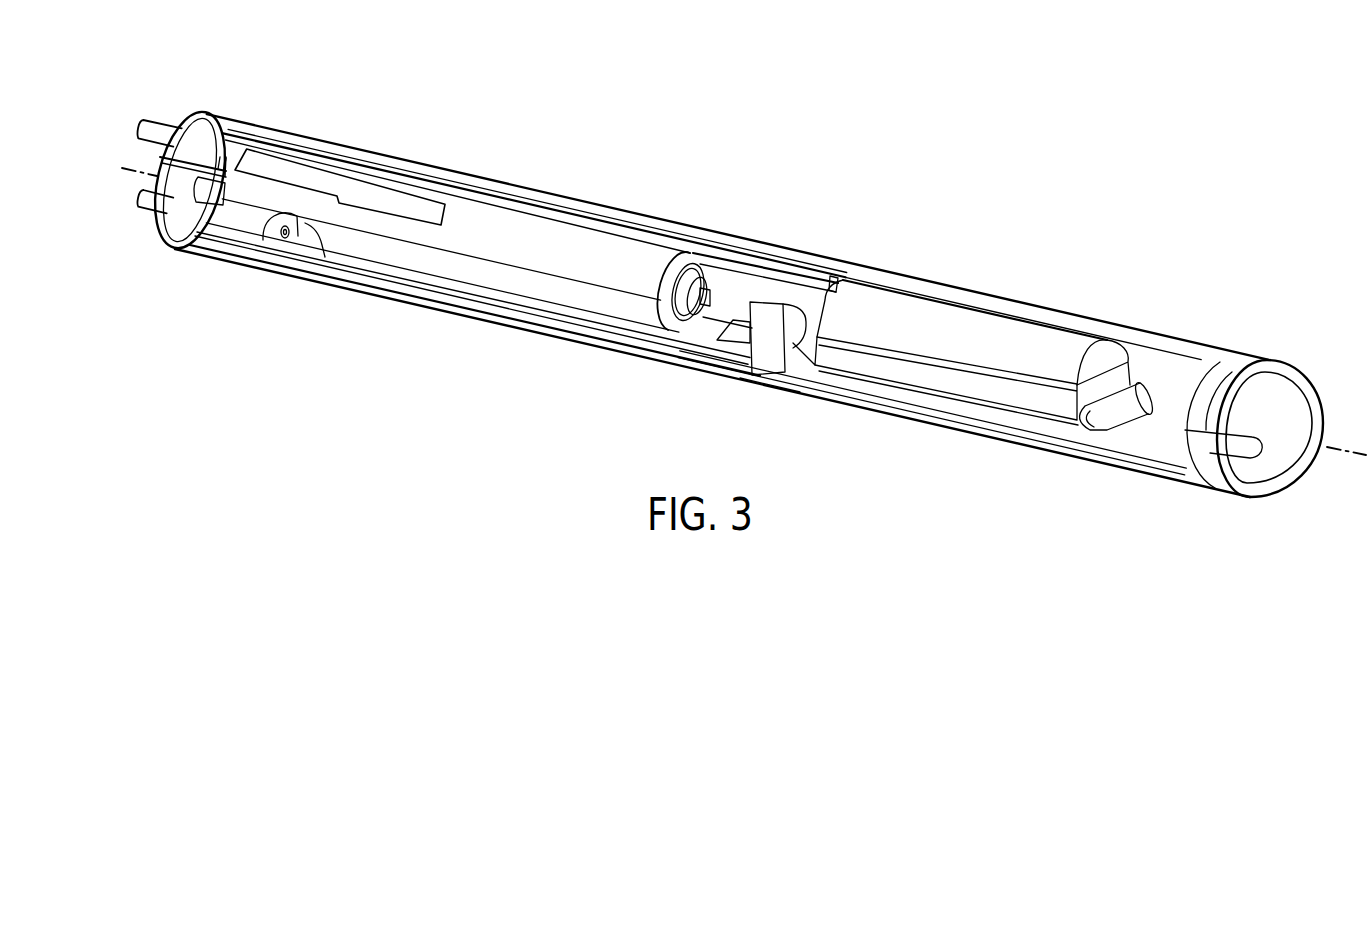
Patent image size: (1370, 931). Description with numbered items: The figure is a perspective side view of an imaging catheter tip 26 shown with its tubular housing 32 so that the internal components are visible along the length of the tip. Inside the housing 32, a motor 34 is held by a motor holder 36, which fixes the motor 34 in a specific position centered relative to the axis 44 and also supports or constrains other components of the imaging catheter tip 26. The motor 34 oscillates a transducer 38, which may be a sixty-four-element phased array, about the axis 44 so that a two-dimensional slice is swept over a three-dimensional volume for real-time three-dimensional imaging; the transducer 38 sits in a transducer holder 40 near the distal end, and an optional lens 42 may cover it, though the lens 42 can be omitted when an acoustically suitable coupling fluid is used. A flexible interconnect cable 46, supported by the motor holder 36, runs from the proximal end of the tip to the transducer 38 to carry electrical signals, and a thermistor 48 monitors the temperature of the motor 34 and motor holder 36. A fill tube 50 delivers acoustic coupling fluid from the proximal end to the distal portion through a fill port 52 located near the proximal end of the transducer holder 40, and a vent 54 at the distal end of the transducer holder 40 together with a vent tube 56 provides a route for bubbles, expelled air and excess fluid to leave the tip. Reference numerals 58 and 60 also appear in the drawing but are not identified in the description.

The imaging catheter tip 26 is at (695, 304).
The housing 32 is at (978, 432).
The motor 34 is at (458, 272).
The motor holder 36 is at (567, 240).
The transducer 38 is at (1023, 395).
The transducer holder 40 is at (1220, 380).
The lens 42 is at (961, 314).
The axis 44 is at (1333, 447).
The flexible interconnect cable 46 is at (545, 320).
The thermistor 48 is at (397, 213).
The fill tube 50 is at (736, 262).
The fill port 52 is at (833, 270).
The vent 54 is at (1203, 443).
The vent tube 56 is at (286, 240).
The contact block 58 is at (743, 338).
The slot 60 is at (768, 400).